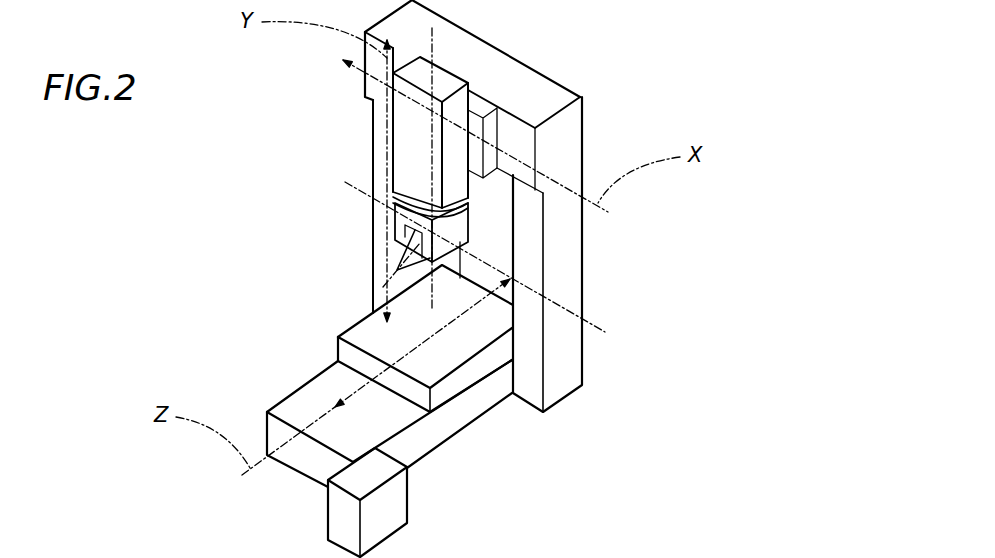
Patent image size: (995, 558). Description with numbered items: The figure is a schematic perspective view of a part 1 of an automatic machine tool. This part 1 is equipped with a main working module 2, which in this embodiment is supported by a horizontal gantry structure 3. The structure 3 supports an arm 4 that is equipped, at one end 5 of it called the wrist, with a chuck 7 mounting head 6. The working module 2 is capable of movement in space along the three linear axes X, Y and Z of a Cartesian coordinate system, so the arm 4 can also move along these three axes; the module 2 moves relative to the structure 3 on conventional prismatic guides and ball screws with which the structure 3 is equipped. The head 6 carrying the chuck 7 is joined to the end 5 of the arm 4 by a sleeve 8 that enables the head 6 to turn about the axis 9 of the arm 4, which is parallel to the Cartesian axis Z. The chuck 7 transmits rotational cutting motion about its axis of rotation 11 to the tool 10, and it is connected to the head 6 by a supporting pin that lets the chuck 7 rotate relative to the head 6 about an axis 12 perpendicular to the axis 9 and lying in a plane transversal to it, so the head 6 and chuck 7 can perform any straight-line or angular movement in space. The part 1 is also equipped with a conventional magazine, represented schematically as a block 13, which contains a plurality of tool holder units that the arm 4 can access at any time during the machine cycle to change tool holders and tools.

The part of an automatic machine tool 1 is at (592, 71).
The main working module 2 is at (395, 195).
The horizontal gantry structure 3 is at (585, 132).
The arm 4 is at (393, 128).
The end of the arm (wrist) 5 is at (392, 205).
The chuck mounting head 6 is at (395, 233).
The chuck 7 is at (397, 260).
The sleeve 8 is at (604, 552).
The axis of the arm 9 is at (433, 40).
The tool 10 is at (397, 277).
The axis of rotation of the chuck 11 is at (371, 300).
The axis perpendicular to the arm axis 12 is at (600, 330).
The magazine block 13 is at (382, 470).